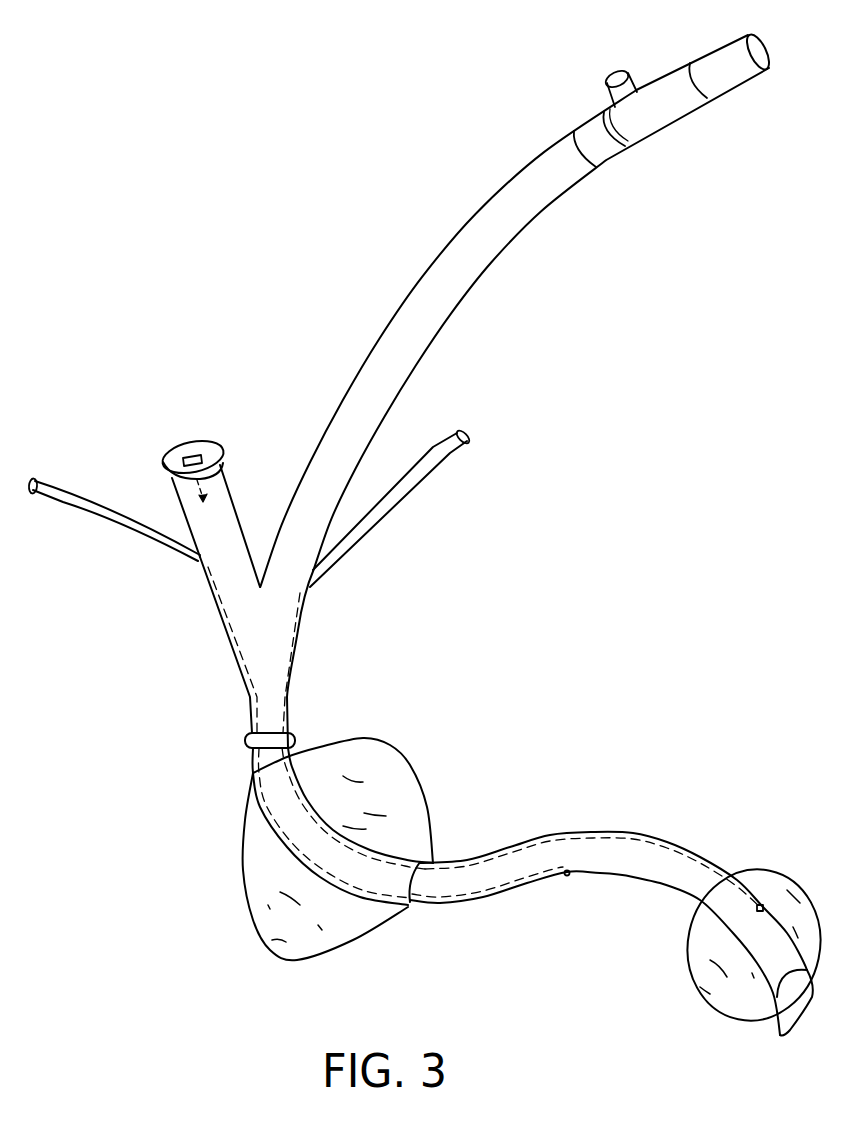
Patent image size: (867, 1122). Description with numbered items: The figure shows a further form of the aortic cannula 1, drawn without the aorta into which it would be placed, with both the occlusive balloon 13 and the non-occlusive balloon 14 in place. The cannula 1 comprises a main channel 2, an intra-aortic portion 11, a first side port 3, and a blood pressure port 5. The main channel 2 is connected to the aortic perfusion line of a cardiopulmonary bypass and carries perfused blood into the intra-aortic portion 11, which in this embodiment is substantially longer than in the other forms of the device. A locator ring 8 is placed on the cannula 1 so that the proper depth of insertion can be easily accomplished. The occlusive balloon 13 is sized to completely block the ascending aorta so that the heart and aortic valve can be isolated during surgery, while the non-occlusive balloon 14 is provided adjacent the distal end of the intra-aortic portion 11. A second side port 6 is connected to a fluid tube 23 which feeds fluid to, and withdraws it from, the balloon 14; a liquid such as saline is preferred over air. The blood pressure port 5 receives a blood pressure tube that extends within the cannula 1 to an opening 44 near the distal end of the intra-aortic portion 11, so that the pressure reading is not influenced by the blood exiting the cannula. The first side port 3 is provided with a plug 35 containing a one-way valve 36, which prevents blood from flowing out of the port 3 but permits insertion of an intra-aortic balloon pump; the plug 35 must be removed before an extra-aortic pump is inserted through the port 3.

The cannula 1 is at (283, 318).
The main channel 2 is at (557, 185).
The first side port 3 is at (231, 516).
The blood pressure port 5 is at (63, 497).
The second side port 6 is at (450, 450).
The locator ring 8 is at (295, 733).
The intra-aortic portion 11 is at (542, 871).
The occlusive balloon 13 is at (405, 794).
The non-occlusive balloon 14 is at (812, 912).
The fluid tube 23 is at (387, 507).
The plug 35 is at (210, 452).
The one-way valve 36 is at (195, 445).
The opening 44 is at (570, 876).